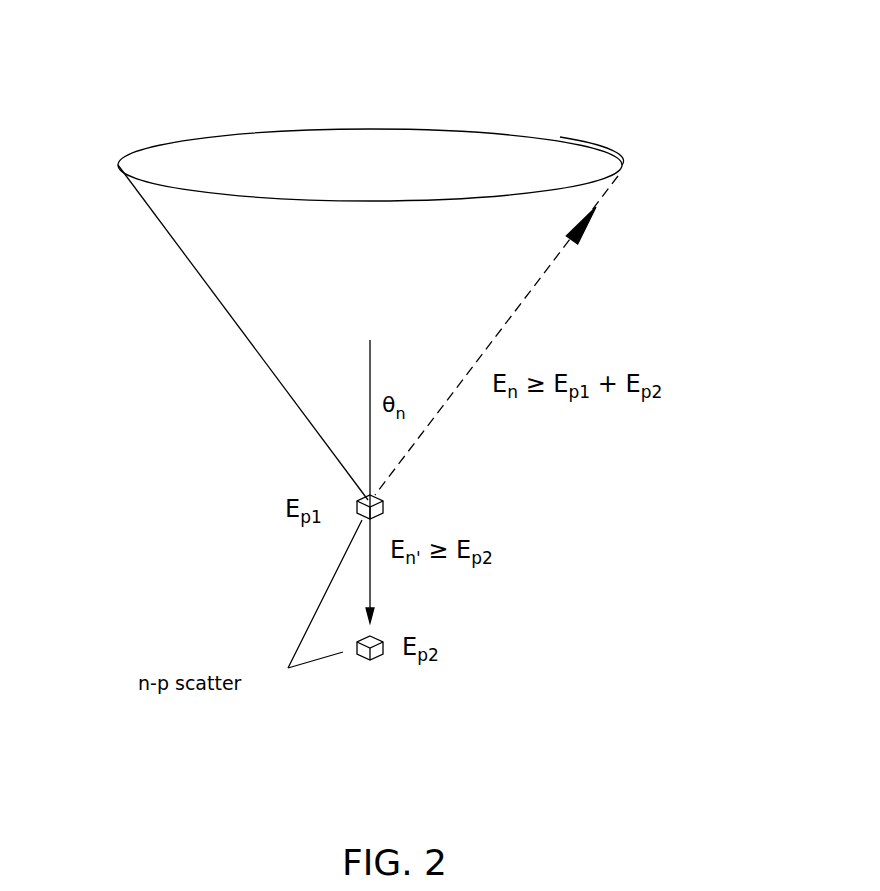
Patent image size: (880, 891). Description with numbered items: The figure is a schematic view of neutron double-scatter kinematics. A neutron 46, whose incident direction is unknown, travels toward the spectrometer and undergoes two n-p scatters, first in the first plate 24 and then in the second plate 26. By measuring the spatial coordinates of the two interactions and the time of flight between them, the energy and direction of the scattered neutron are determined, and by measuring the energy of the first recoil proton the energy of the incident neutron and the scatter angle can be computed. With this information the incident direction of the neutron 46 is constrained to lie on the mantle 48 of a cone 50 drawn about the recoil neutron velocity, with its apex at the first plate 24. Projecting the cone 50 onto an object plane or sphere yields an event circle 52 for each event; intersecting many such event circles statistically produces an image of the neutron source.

The cone 50 is at (183, 158).
The event circle 52 is at (614, 152).
The mantle 48 is at (240, 332).
The neutron 46 is at (600, 197).
The first plate 24 is at (383, 500).
The second plate 26 is at (458, 647).